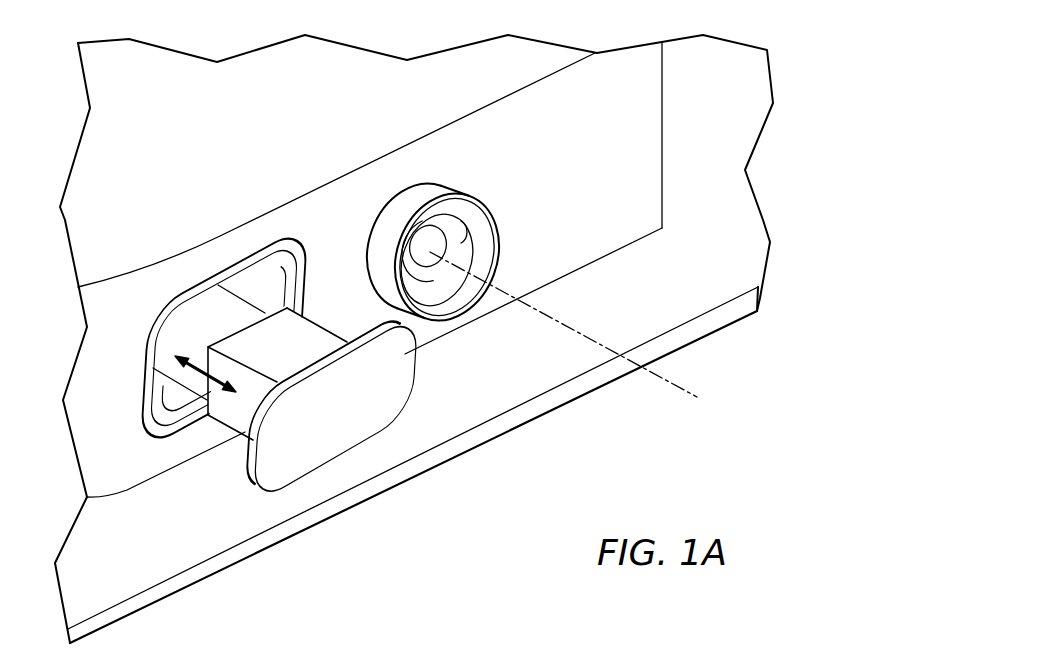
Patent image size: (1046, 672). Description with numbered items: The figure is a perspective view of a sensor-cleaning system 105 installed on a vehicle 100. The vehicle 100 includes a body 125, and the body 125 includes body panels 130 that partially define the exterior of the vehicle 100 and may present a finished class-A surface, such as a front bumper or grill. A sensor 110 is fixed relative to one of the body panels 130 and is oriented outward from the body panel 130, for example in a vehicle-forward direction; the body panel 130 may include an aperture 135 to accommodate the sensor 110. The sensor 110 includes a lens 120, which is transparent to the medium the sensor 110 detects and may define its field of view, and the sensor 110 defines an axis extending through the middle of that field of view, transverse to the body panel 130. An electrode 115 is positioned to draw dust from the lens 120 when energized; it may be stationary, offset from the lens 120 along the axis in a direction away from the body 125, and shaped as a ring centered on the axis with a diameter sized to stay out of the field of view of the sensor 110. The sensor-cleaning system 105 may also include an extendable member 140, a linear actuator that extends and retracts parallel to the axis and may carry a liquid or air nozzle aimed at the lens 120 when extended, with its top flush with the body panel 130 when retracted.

The vehicle 100 is at (450, 326).
The sensor-cleaning system 105 is at (288, 117).
The sensor 110 is at (541, 267).
The electrode 115 is at (502, 253).
The lens 120 is at (430, 250).
The body 125 is at (465, 452).
The body panel 130 is at (623, 133).
The aperture 135 is at (470, 232).
The extendable member 140 is at (257, 345).